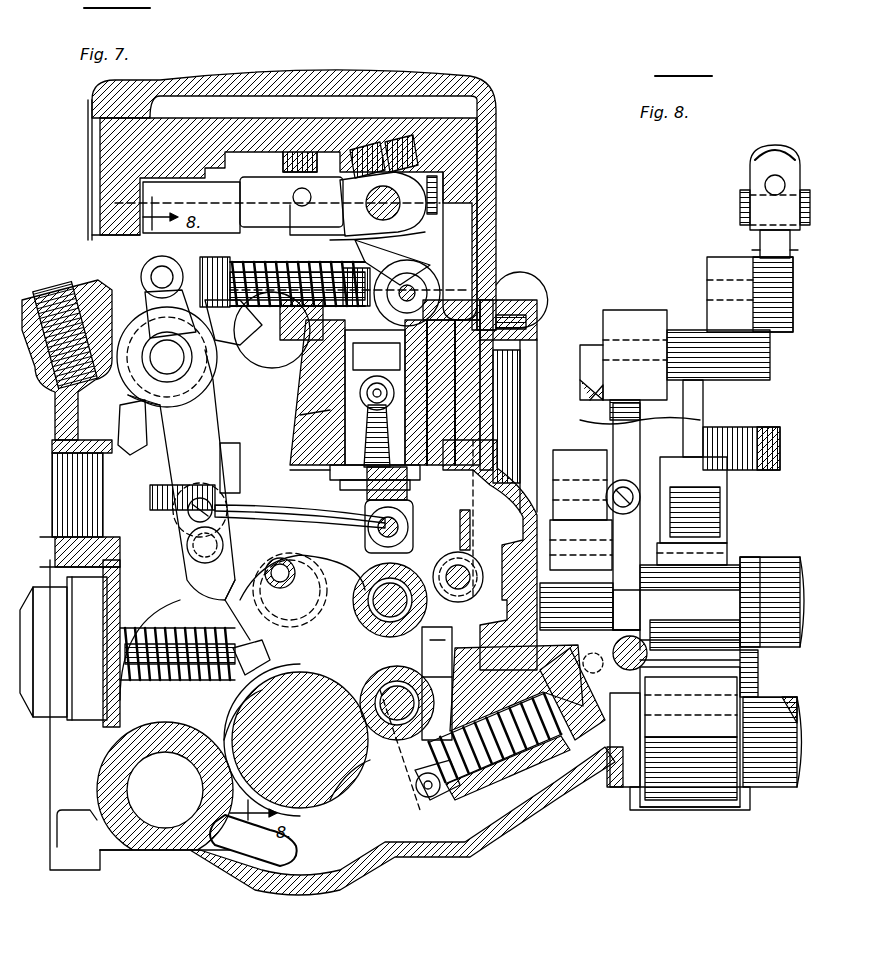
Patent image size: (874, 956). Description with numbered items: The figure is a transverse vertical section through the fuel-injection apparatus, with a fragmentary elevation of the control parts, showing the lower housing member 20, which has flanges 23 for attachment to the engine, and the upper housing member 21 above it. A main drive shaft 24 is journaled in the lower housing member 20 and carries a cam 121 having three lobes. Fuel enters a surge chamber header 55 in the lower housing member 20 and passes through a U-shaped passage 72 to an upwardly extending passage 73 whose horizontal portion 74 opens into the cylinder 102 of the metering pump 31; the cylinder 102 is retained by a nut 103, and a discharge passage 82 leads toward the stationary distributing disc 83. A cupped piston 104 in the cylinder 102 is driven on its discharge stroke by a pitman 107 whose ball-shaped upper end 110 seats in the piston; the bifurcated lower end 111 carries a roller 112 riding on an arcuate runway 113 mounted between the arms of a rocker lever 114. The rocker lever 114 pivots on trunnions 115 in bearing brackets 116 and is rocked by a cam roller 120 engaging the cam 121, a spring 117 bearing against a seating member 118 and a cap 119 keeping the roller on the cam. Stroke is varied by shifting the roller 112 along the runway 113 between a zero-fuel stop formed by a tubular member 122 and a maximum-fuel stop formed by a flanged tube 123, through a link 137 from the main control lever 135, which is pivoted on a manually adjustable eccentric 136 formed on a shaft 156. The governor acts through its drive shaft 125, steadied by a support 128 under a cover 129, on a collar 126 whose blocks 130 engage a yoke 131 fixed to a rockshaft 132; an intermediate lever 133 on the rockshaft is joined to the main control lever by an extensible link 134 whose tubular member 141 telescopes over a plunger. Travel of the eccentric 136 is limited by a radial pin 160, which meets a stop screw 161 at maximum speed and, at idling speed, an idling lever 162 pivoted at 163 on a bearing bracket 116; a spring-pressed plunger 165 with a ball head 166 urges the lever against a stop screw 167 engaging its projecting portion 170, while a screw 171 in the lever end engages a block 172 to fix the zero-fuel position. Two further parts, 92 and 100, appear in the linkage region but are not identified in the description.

In FIG. 7, the cover 129 is at (480, 78).
In FIG. 7, the support 128 is at (480, 142).
In FIG. 7, the governor drive shaft 125 is at (360, 140).
In FIG. 7, the collar 126 is at (242, 190).
In FIG. 7, the blocks 130 is at (292, 196).
In FIG. 7, the pin 92 is at (290, 222).
In FIG. 7, the yoke 131 is at (400, 190).
In FIG. 7, the rockshaft 132 is at (434, 214).
In FIG. 8, the rockshaft 132 is at (745, 190).
In FIG. 7, the upper housing member 21 is at (492, 230).
In FIG. 7, the intermediate lever 133 is at (395, 255).
In FIG. 8, the intermediate lever 133 is at (765, 243).
In FIG. 7, the upper horizontally extending portion 74 is at (492, 292).
In FIG. 7, the stationary disc 83 is at (127, 245).
In FIG. 7, the spring 100 is at (195, 272).
In FIG. 7, the tubular member 141 is at (427, 283).
In FIG. 7, the eccentric 136 is at (147, 315).
In FIG. 8, the eccentric 136 is at (655, 316).
In FIG. 7, the shaft 156 is at (121, 348).
In FIG. 8, the shaft 156 is at (590, 345).
In FIG. 7, the cylinder 102 is at (248, 352).
In FIG. 7, the extensible link 134 is at (260, 342).
In FIG. 8, the extensible link 134 is at (793, 332).
In FIG. 7, the passage 82 is at (280, 360).
In FIG. 7, the upwardly extending passage 73 is at (502, 374).
In FIG. 7, the metering pump 31 is at (268, 368).
In FIG. 8, the metering pump 31 is at (790, 420).
In FIG. 7, the screw 161 is at (56, 400).
In FIG. 7, the pin 160 is at (75, 440).
In FIG. 8, the pin 160 is at (607, 420).
In FIG. 7, the main control lever 135 is at (207, 397).
In FIG. 8, the main control lever 135 is at (705, 412).
In FIG. 7, the screw 171 is at (198, 495).
In FIG. 8, the screw 171 is at (608, 482).
In FIG. 7, the ball-shaped upper end 110 is at (300, 418).
In FIG. 7, the block 172 is at (238, 448).
In FIG. 8, the block 172 is at (576, 455).
In FIG. 7, the piston 104 is at (300, 455).
In FIG. 7, the nut 103 is at (300, 472).
In FIG. 7, the link 137 is at (300, 508).
In FIG. 8, the link 137 is at (697, 514).
In FIG. 7, the pitman 107 is at (345, 480).
In FIG. 7, the bearing bracket 116 is at (366, 455).
In FIG. 8, the bearing bracket 116 is at (593, 566).
In FIG. 7, the bifurcated lower end 111 is at (408, 496).
In FIG. 7, the roller 112 is at (413, 527).
In FIG. 8, the roller 112 is at (710, 613).
In FIG. 7, the flanged tube 123 is at (462, 568).
In FIG. 7, the tubular member 122 is at (264, 572).
In FIG. 8, the tubular member 122 is at (713, 567).
In FIG. 7, the trunnion 115 is at (262, 598).
In FIG. 8, the trunnion 115 is at (778, 565).
In FIG. 7, the pivot 163 is at (188, 583).
In FIG. 8, the pivot 163 is at (612, 500).
In FIG. 7, the idling lever 162 is at (204, 588).
In FIG. 8, the idling lever 162 is at (600, 598).
In FIG. 7, the spring-pressed plunger 165 is at (230, 675).
In FIG. 7, the ball-shaped head 166 is at (230, 702).
In FIG. 8, the ball-shaped head 166 is at (640, 682).
In FIG. 7, the sidewardly projecting portion 170 is at (245, 712).
In FIG. 8, the sidewardly projecting portion 170 is at (640, 708).
In FIG. 7, the screw 167 is at (298, 730).
In FIG. 8, the screw 167 is at (600, 632).
In FIG. 7, the runway 113 is at (408, 668).
In FIG. 8, the runway 113 is at (760, 657).
In FIG. 7, the U-shaped passage 72 is at (453, 665).
In FIG. 7, the rocker lever 114 is at (414, 684).
In FIG. 8, the rocker lever 114 is at (758, 676).
In FIG. 7, the cam roller 120 is at (350, 790).
In FIG. 8, the cam roller 120 is at (680, 740).
In FIG. 7, the cam 121 is at (322, 792).
In FIG. 8, the cam 121 is at (697, 807).
In FIG. 7, the surge chamber header 55 is at (168, 815).
In FIG. 7, the flanges 23 is at (80, 860).
In FIG. 7, the lower housing member 20 is at (362, 880).
In FIG. 7, the seating member 118 is at (460, 800).
In FIG. 7, the spring 117 is at (490, 820).
In FIG. 7, the cap 119 is at (593, 780).
In FIG. 8, the main drive shaft 24 is at (780, 787).